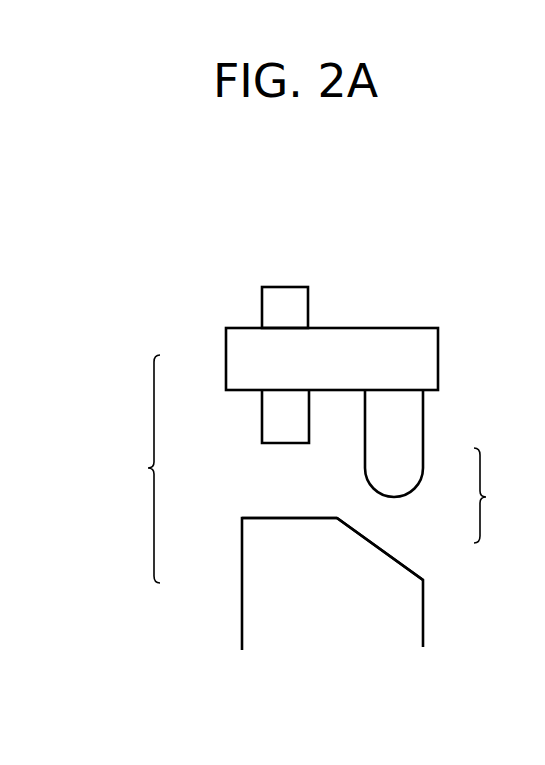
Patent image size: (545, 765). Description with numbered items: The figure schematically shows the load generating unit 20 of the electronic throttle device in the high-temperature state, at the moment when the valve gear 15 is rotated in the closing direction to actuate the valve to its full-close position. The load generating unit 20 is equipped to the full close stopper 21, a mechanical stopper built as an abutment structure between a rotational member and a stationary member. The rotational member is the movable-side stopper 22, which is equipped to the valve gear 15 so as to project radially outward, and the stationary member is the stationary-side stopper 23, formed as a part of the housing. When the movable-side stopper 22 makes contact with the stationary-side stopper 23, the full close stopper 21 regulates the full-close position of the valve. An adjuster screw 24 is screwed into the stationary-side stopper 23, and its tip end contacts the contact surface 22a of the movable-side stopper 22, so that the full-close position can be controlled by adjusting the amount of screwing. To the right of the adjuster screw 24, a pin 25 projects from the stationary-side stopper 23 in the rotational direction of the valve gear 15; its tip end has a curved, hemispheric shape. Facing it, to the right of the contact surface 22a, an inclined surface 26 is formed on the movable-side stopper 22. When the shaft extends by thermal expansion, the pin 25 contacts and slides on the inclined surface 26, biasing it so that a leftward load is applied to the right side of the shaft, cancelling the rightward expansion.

The valve gear 15 is at (283, 618).
The load generating unit 20 is at (494, 495).
The full close stopper 21 is at (140, 469).
The movable-side stopper 22 is at (248, 578).
The contact surface 22a is at (277, 517).
The stationary-side stopper 23 is at (238, 358).
The adjuster screw 24 is at (275, 422).
The pin 25 is at (410, 458).
The inclined surface 26 is at (390, 547).